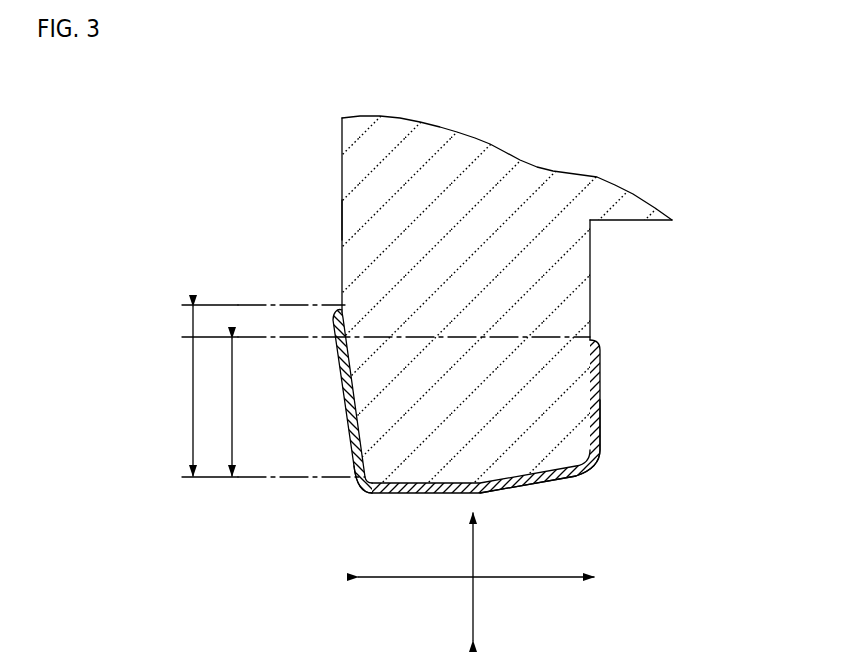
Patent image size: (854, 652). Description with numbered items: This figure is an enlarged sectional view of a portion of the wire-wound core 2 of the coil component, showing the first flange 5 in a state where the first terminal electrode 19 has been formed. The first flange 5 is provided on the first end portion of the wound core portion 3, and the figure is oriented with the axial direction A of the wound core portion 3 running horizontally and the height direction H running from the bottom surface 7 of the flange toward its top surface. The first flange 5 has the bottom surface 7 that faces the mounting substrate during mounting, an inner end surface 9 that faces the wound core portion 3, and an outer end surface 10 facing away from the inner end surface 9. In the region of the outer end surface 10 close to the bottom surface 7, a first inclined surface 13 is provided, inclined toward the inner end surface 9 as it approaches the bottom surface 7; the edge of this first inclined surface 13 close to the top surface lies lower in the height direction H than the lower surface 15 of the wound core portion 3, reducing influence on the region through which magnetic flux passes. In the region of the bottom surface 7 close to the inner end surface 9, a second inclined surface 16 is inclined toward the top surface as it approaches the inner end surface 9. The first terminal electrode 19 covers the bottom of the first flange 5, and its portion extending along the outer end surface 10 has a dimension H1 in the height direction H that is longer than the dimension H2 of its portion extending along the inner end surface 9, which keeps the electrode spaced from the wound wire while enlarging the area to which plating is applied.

The wire-wound core 2 is at (481, 274).
The wound core portion 3 is at (642, 196).
The first flange 5 is at (340, 167).
The bottom surface 7 is at (417, 494).
The inner end surface 9 is at (591, 284).
The outer end surface 10 is at (340, 218).
The first inclined surface 13 is at (349, 415).
The lower surface 15 is at (666, 223).
The second inclined surface 16 is at (540, 487).
The first terminal electrode 19 is at (362, 484).
The dimension H1 is at (192, 370).
The dimension H2 is at (234, 385).
The height direction H is at (486, 572).
The axial direction A is at (490, 582).